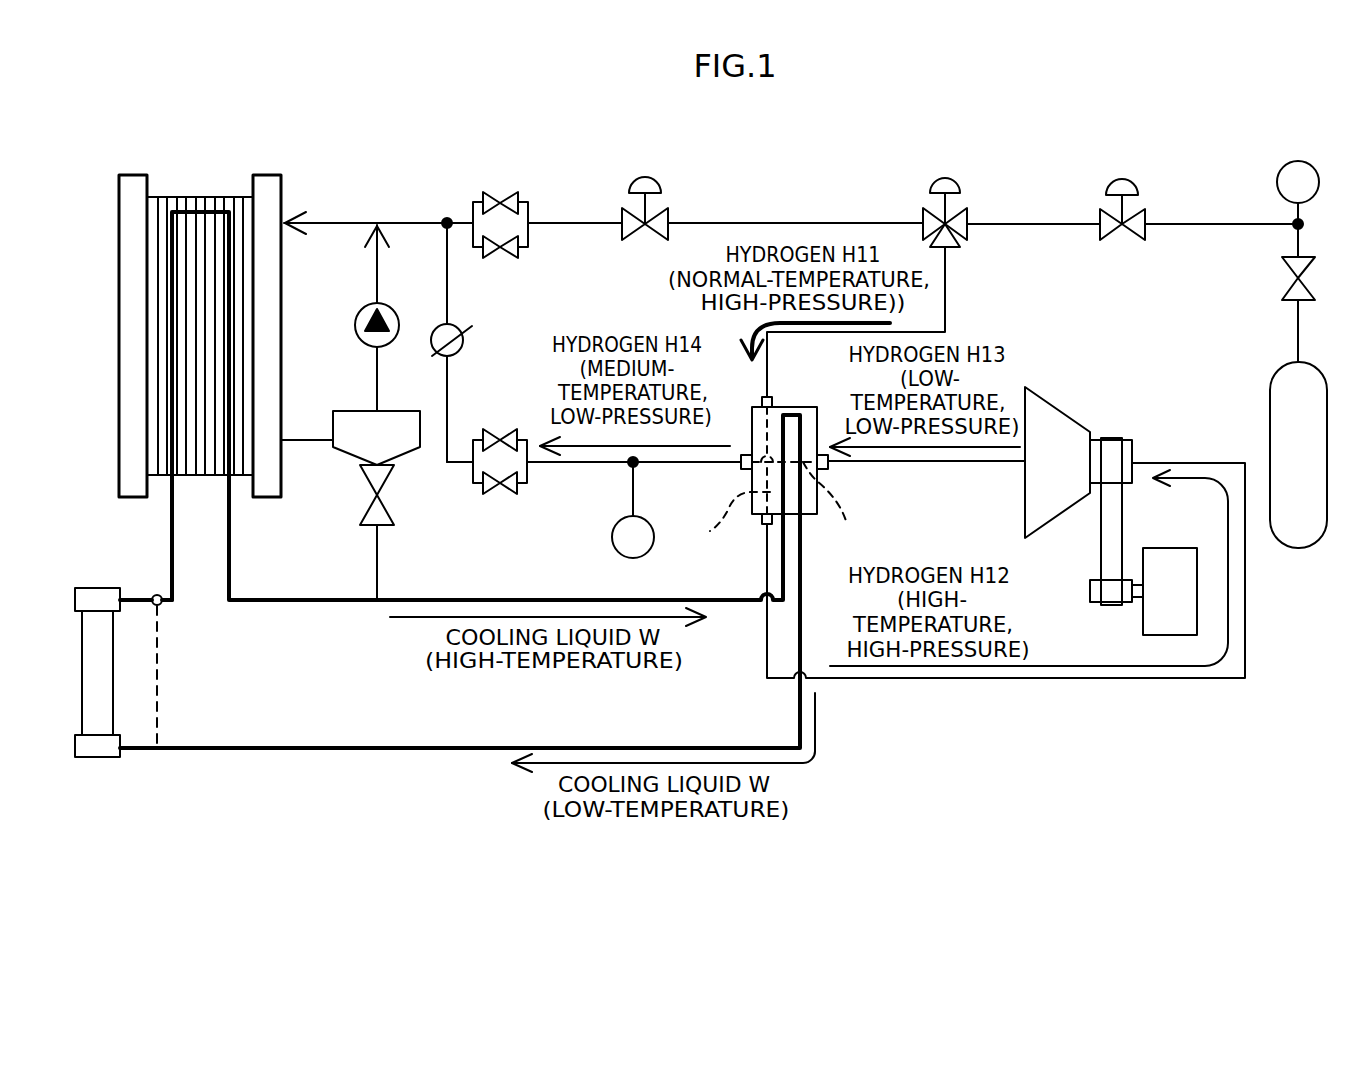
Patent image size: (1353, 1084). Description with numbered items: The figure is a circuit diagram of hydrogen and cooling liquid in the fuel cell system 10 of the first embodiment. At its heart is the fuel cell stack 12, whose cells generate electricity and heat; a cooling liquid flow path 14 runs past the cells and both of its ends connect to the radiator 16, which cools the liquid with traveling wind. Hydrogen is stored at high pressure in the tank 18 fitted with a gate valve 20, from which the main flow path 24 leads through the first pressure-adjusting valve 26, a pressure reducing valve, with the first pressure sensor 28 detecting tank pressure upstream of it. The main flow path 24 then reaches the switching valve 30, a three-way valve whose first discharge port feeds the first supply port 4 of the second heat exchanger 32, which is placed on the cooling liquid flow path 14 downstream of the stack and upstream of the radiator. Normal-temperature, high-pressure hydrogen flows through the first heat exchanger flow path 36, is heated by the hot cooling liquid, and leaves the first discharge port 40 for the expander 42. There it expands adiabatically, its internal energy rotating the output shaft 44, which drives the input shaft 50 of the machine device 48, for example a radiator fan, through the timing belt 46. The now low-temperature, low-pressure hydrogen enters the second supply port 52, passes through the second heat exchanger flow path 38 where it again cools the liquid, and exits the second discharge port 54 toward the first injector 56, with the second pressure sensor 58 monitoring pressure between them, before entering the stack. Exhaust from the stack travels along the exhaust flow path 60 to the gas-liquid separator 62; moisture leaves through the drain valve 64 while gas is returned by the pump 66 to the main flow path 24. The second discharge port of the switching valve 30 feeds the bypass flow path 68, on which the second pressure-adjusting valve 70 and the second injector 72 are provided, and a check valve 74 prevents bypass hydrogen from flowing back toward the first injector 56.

The inlet port 4 is at (760, 398).
The fuel cell system 10 is at (1035, 177).
The fuel cell stack 12 is at (290, 181).
The cooling liquid flow path 14 is at (336, 742).
The radiator 16 is at (101, 588).
The tank 18 is at (1270, 400).
The gate valve 20 is at (1283, 276).
The main flow path 24 is at (950, 290).
The first pressure-adjusting valve 26 is at (1143, 208).
The first pressure sensor 28 is at (1274, 183).
The switching valve 30 is at (962, 204).
The second heat exchanger 32 is at (795, 406).
The first heat exchanger flow path 36 is at (726, 519).
The second heat exchanger flow path 38 is at (832, 506).
The first discharge port 40 is at (762, 522).
The expander 42 is at (1062, 405).
The output shaft 44 is at (1135, 451).
The timing belt 46 is at (1105, 544).
The machine device 48 is at (1142, 613).
The input shaft 50 is at (1089, 590).
The second supply port 52 is at (830, 471).
The second discharge port 54 is at (742, 471).
The first injector 56 is at (501, 423).
The second pressure sensor 58 is at (611, 523).
The exhaust flow path 60 is at (318, 444).
The gas-liquid separator 62 is at (357, 407).
The drain valve 64 is at (393, 502).
The pump 66 is at (357, 305).
The bypass flow path 68 is at (796, 221).
The second pressure-adjusting valve 70 is at (661, 204).
The second injector 72 is at (531, 212).
The check valve 74 is at (470, 330).